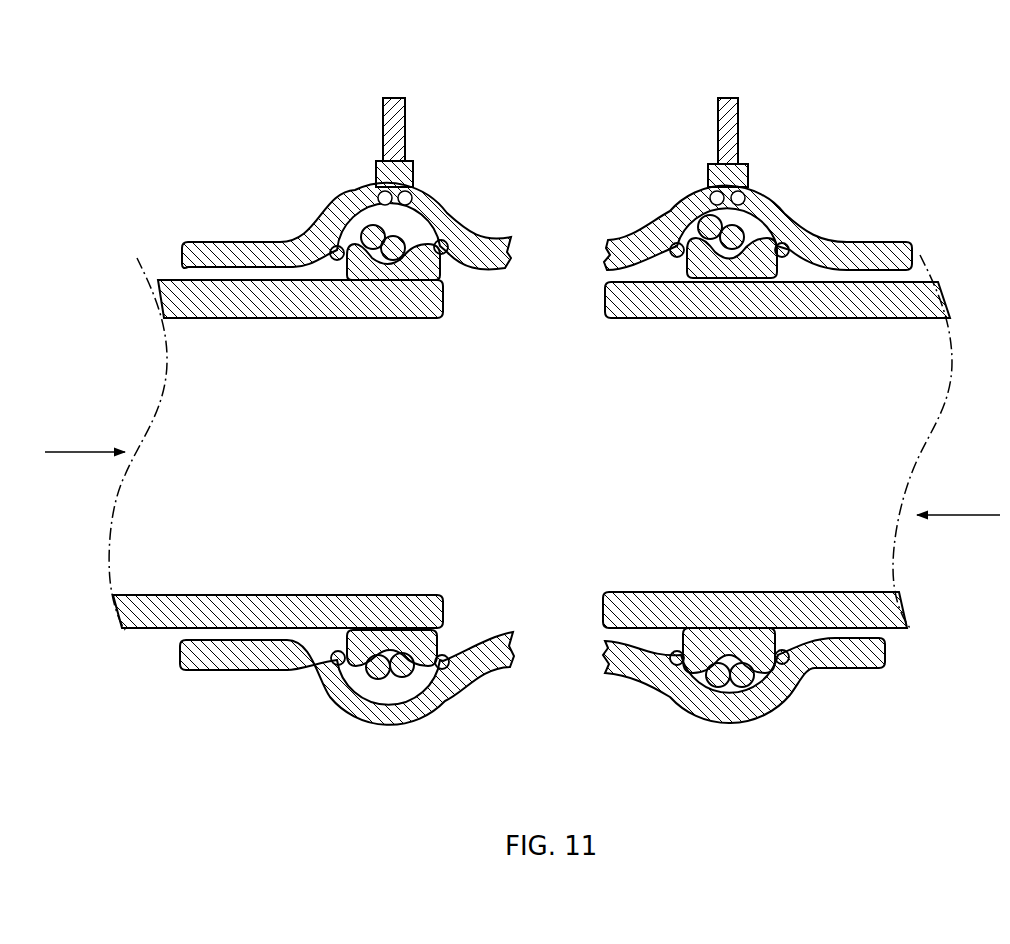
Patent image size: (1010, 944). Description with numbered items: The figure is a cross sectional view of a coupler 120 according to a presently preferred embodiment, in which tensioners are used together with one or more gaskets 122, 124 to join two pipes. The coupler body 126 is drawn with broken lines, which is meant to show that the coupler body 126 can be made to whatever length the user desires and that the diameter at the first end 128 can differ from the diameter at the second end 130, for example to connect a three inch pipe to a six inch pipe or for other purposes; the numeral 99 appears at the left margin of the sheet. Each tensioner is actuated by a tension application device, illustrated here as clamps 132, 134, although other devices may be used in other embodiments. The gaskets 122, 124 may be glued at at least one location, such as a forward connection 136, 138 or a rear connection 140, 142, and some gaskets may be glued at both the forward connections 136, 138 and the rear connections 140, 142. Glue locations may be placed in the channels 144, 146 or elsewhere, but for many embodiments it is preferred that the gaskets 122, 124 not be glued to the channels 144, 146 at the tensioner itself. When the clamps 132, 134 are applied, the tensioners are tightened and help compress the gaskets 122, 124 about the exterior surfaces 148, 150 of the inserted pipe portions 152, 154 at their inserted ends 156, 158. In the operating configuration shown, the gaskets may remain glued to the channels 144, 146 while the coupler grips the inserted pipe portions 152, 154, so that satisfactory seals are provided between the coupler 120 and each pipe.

The reference 99 is at (83, 444).
The coupler 120 is at (776, 95).
The gasket 122 is at (374, 272).
The gasket 124 is at (698, 274).
The coupler body 126 is at (499, 232).
The first end 128 is at (80, 452).
The second end 130 is at (950, 515).
The clamp 132 is at (293, 128).
The clamp 134 is at (753, 96).
The forward connection 136 is at (336, 251).
The forward connection 138 is at (773, 272).
The rear connection 140 is at (441, 246).
The rear connection 142 is at (677, 248).
The channel 144 is at (376, 232).
The channel 146 is at (734, 236).
The exterior surface 148 is at (178, 290).
The exterior surface 150 is at (843, 297).
The inserted pipe portion 152 is at (300, 587).
The inserted pipe portion 154 is at (799, 570).
The inserted end 156 is at (455, 611).
The inserted end 158 is at (594, 605).